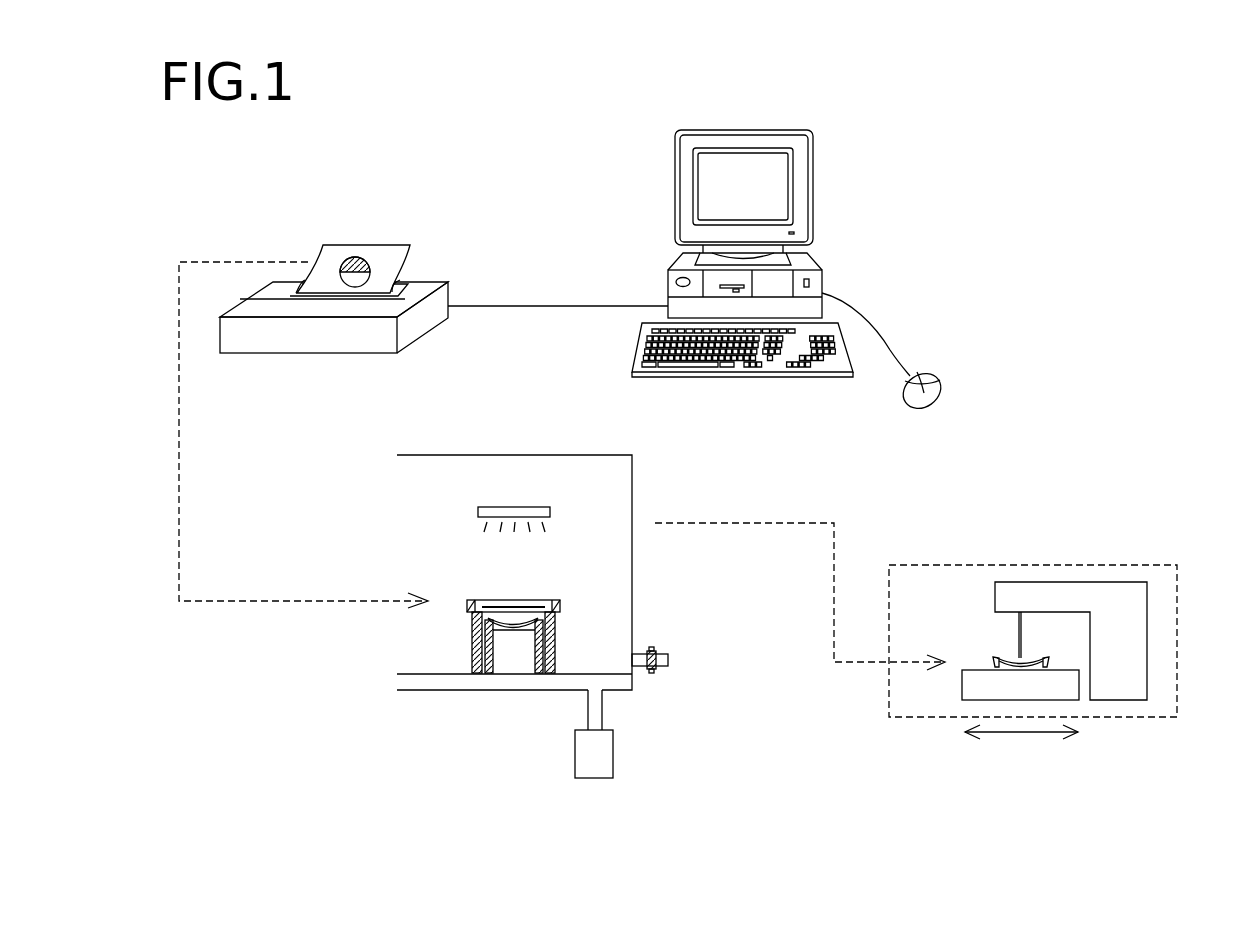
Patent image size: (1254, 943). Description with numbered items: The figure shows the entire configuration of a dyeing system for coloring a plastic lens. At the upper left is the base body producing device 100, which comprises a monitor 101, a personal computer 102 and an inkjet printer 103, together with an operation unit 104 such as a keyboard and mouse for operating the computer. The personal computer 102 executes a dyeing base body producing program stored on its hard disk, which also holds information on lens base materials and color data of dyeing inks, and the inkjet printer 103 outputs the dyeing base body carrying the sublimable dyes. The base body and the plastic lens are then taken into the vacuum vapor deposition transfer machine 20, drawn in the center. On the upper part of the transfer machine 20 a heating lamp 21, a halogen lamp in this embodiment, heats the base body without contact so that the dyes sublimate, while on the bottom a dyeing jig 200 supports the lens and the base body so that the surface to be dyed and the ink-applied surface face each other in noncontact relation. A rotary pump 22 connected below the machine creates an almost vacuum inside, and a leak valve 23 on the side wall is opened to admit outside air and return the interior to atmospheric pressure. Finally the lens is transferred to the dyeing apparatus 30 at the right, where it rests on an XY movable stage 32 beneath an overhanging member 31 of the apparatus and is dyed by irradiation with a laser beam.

The vacuum vapor deposition transfer machine 20 is at (632, 492).
The heating lamp 21 is at (537, 507).
The rotary pump 22 is at (613, 750).
The leak valve 23 is at (662, 650).
The dyeing apparatus 30 is at (1115, 558).
The measuring head 31 is at (1147, 618).
The XY movable stage 32 is at (1079, 683).
The base body producing device 100 is at (892, 133).
The monitor 101 is at (813, 197).
The personal computer 102 is at (822, 273).
The inkjet printer 103 is at (427, 318).
The operation unit 104 is at (833, 377).
The dyeing jig 200 is at (568, 627).